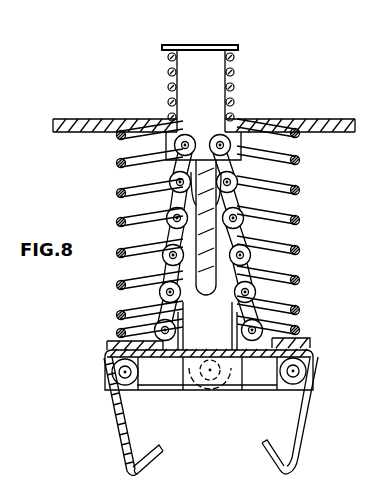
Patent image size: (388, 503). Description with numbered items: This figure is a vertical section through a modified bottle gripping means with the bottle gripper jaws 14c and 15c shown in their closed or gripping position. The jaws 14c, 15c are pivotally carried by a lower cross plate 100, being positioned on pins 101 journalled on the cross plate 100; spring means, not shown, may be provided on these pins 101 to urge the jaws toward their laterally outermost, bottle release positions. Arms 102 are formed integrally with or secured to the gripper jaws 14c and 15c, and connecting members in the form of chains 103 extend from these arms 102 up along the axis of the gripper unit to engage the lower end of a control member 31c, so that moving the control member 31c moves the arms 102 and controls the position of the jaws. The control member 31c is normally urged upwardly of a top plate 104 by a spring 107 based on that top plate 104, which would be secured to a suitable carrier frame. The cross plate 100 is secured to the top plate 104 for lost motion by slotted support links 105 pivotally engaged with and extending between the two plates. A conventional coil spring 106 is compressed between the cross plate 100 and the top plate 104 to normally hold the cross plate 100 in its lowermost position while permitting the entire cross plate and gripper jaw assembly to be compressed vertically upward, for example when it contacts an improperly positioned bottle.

The control member 31c is at (220, 43).
The spring 107 is at (232, 88).
The top plate 104 is at (297, 118).
The chains 103 is at (291, 213).
The coil spring 106 is at (302, 249).
The lower cross plate 100 is at (182, 384).
The slotted support links 105 is at (201, 343).
The pins 101 is at (125, 380).
The arms 102 is at (236, 386).
The bottle gripper jaw 14c is at (122, 455).
The bottle gripper jaw 15c is at (308, 441).